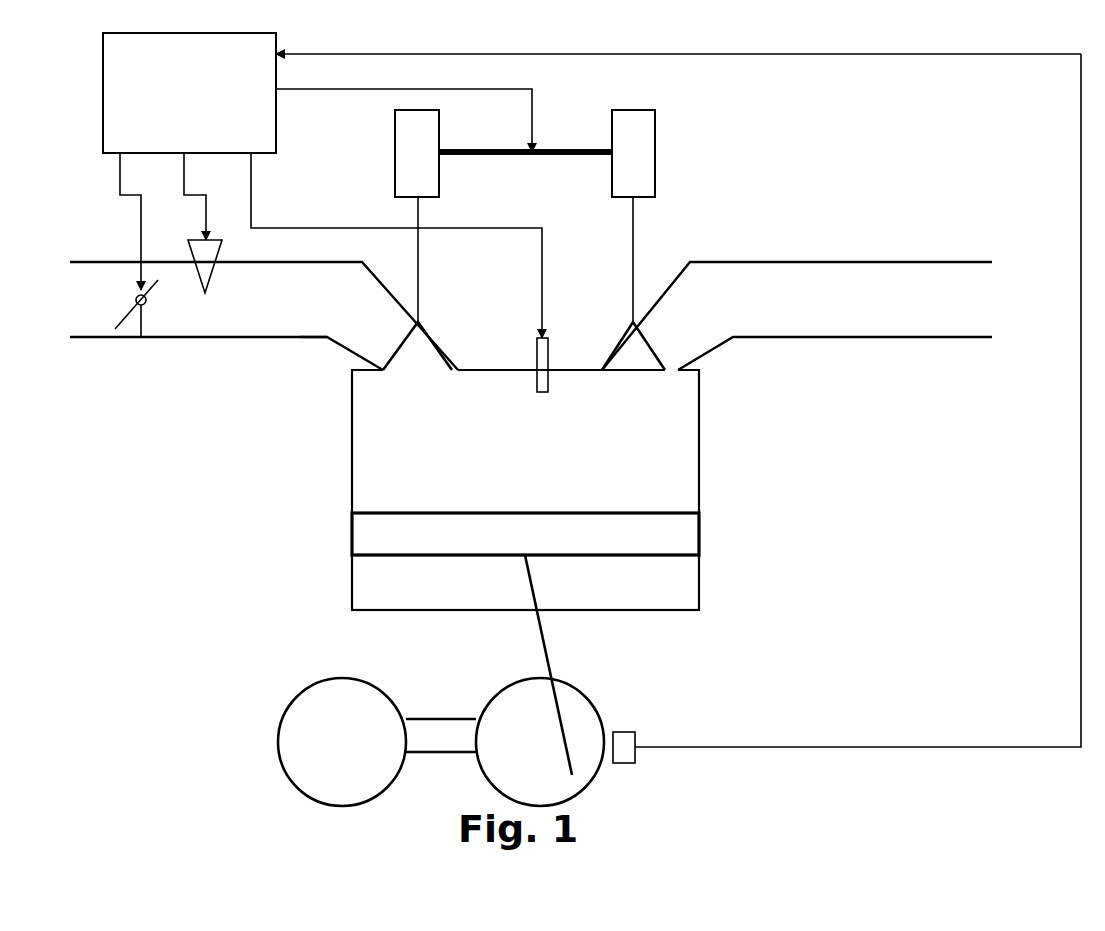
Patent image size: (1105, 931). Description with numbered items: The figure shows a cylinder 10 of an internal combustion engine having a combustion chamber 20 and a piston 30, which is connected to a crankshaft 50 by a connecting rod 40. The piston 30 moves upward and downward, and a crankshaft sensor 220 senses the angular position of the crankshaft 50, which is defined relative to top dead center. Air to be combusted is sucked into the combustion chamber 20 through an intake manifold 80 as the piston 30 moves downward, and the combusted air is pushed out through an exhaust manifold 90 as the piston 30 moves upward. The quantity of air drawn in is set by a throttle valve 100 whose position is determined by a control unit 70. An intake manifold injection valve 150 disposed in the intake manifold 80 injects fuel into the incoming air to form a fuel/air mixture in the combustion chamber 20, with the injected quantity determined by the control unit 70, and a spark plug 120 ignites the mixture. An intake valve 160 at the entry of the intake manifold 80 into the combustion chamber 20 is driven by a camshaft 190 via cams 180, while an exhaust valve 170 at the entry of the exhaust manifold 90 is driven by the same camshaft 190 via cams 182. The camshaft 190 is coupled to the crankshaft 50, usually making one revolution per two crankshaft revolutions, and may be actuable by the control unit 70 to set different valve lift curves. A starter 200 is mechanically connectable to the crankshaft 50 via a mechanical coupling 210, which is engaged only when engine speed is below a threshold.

The cylinder 10 is at (508, 503).
The combustion chamber 20 is at (525, 441).
The piston 30 is at (687, 558).
The connecting rod 40 is at (545, 640).
The crankshaft 50 is at (540, 742).
The control unit 70 is at (189, 93).
The intake manifold 80 is at (213, 268).
The exhaust manifold 90 is at (797, 316).
The throttle valve 100 is at (143, 315).
The spark plug 120 is at (560, 330).
The intake manifold injection valve 150 is at (282, 321).
The intake valve 160 is at (398, 348).
The exhaust valve 170 is at (638, 355).
The cams 180 is at (383, 145).
The cams 182 is at (670, 155).
The camshaft 190 is at (577, 170).
The starter 200 is at (342, 742).
The mechanical coupling 210 is at (432, 713).
The crankshaft sensor 220 is at (648, 763).